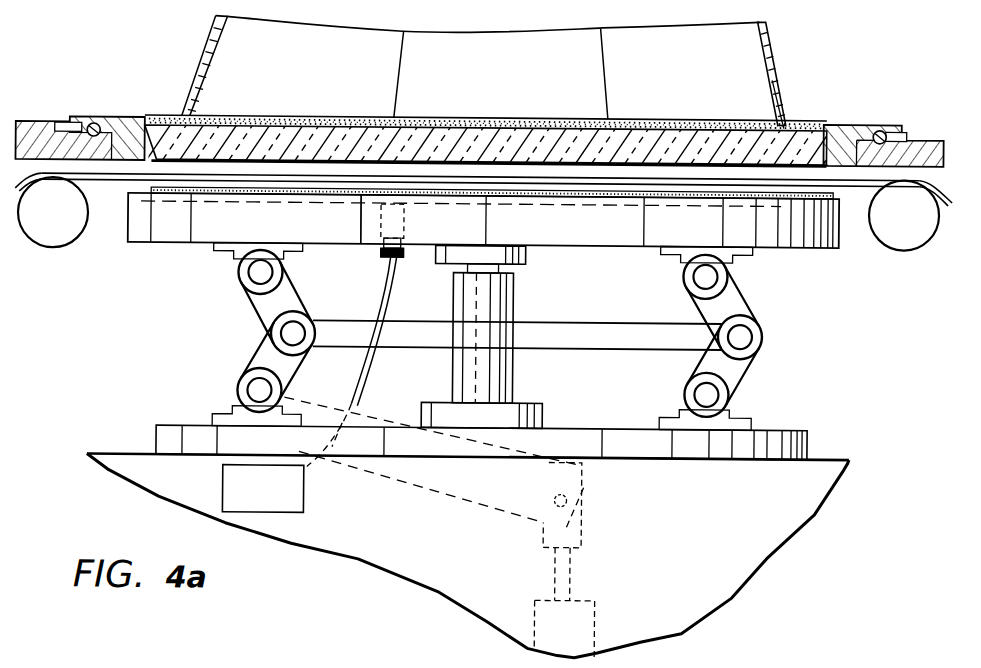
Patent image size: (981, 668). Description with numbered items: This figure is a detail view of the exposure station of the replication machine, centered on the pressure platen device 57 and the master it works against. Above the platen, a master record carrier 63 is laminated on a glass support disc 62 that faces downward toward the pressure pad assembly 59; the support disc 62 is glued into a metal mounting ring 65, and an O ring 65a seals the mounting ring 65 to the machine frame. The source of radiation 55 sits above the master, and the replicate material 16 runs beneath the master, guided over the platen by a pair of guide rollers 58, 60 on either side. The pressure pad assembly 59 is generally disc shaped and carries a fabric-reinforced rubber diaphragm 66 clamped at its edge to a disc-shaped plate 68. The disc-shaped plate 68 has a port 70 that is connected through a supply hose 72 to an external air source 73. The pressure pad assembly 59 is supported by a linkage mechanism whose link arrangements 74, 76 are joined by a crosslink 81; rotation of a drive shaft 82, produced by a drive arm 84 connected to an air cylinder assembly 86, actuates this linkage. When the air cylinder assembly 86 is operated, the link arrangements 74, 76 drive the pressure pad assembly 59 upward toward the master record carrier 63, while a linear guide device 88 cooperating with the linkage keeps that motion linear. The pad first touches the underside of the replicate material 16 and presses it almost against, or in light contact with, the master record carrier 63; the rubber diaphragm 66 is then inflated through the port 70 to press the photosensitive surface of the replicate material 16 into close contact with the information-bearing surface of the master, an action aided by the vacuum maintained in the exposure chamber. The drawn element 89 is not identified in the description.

The replicate material 16 is at (853, 186).
The source of radiation 55 is at (781, 79).
The pressure platen device 57 is at (465, 333).
The guide roller 58 is at (68, 246).
The pressure pad assembly 59 is at (615, 234).
The guide roller 60 is at (905, 248).
The glass support disc 62 is at (518, 142).
The master record carrier 63 is at (690, 160).
The metal mounting ring 65 is at (128, 121).
The O ring 65a is at (90, 127).
The fabric-reinforced rubber diaphragm 66 is at (284, 190).
The disc-shaped plate 68 is at (360, 236).
The port 70 is at (398, 217).
The supply hose 72 is at (393, 286).
The external air source 73 is at (224, 476).
The link arrangement 74 is at (262, 313).
The link arrangement 76 is at (750, 301).
The crosslink 81 is at (630, 341).
The drive shaft 82 is at (250, 392).
The drive arm 84 is at (493, 497).
The air cylinder assembly 86 is at (603, 617).
The linear guide device 88 is at (514, 305).
The carton side wall 89 is at (760, 104).